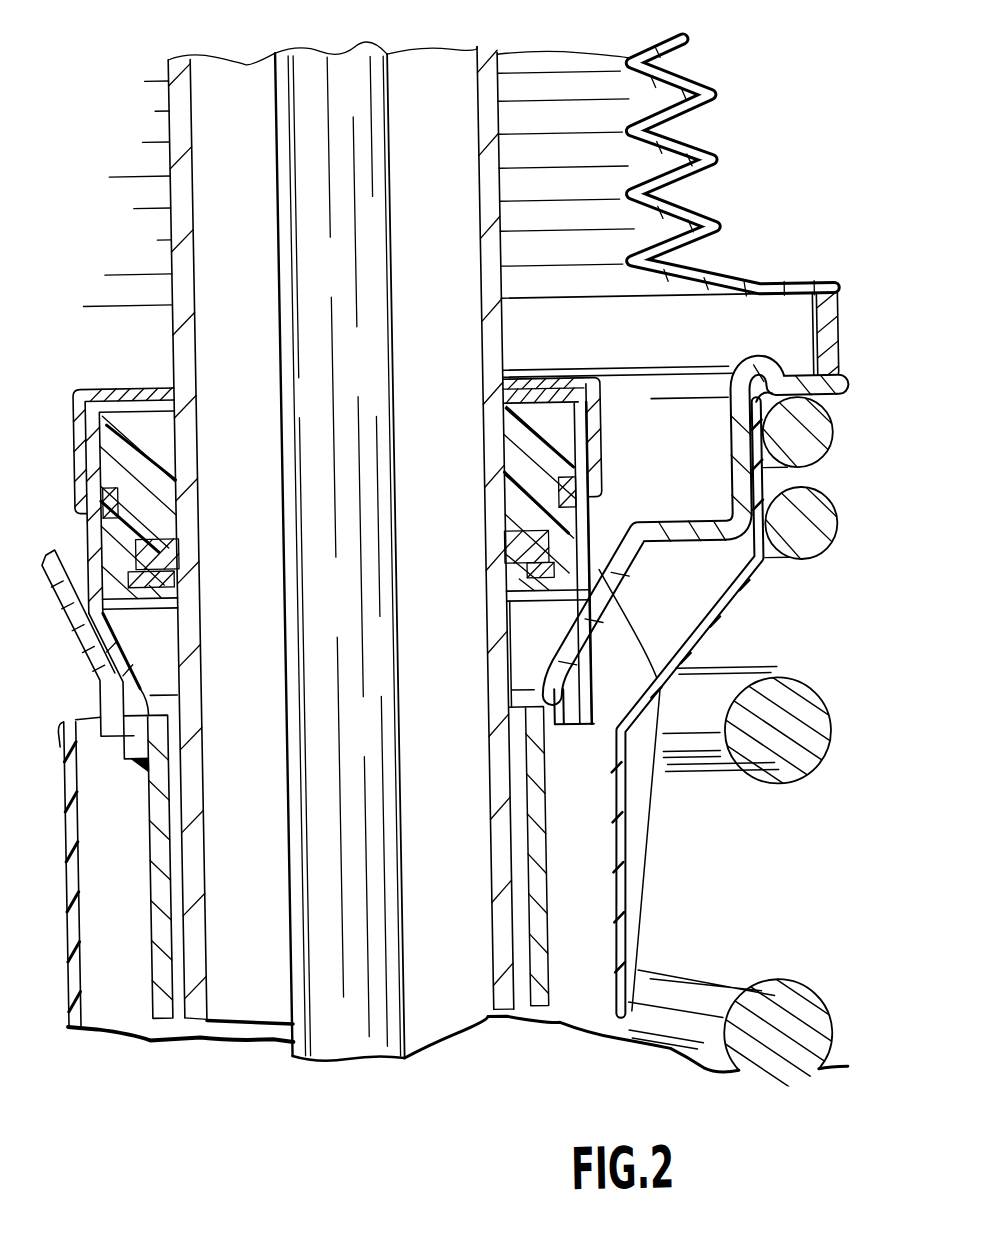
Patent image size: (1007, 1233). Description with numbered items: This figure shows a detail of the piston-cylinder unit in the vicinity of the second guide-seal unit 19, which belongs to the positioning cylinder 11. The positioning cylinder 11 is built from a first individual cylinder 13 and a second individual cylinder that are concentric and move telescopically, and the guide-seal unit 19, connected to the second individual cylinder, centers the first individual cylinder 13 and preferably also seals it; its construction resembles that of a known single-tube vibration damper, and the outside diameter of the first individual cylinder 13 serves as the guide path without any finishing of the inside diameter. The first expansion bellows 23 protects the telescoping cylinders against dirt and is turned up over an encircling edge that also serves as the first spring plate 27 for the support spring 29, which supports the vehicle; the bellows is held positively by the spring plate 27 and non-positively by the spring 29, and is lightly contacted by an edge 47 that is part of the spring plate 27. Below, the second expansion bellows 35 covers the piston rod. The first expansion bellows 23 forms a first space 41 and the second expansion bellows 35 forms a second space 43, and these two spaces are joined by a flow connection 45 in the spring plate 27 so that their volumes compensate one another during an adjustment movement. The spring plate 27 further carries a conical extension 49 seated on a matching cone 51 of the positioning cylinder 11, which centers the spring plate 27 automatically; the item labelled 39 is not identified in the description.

The positioning cylinder 11 is at (114, 969).
The first individual cylinder 13 is at (174, 100).
The second guide-seal unit 19 is at (603, 438).
The first expansion bellows 23 is at (686, 106).
The first spring plate 27 is at (638, 589).
The support spring 29 is at (801, 752).
The second expansion bellows 35 is at (606, 920).
The piston rod 39 is at (496, 291).
The first space 41 is at (604, 218).
The second space 43 is at (668, 633).
The flow connection 45 is at (690, 520).
The edge 47 is at (812, 360).
The conical extension 49 is at (649, 696).
The matching cone 51 is at (552, 654).